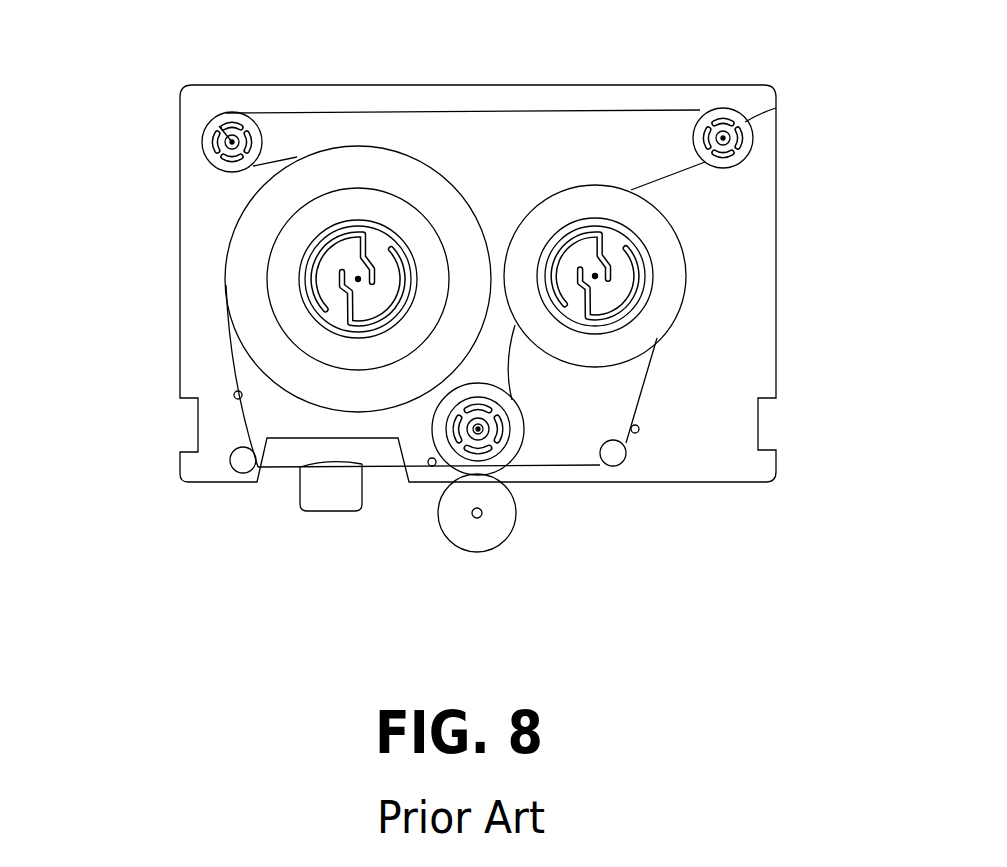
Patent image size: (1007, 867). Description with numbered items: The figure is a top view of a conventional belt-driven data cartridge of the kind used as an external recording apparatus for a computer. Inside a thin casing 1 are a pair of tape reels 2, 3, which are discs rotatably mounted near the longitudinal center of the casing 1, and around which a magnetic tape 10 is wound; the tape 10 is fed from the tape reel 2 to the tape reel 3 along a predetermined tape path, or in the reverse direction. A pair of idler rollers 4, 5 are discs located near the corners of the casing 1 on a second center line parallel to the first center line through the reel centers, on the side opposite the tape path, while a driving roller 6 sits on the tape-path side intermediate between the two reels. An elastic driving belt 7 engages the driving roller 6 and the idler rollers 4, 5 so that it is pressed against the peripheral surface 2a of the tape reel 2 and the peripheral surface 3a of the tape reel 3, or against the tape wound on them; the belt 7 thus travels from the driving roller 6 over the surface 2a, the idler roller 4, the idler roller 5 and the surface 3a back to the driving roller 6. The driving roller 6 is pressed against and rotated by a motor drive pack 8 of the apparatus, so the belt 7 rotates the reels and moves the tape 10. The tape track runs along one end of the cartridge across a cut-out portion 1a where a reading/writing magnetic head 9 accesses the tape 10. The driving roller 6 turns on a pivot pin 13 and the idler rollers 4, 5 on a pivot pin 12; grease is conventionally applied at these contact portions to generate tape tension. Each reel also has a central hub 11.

The casing 1 is at (777, 265).
The cut-out portion 1a is at (380, 475).
The tape reel 2 is at (277, 281).
The peripheral surface 2a is at (428, 163).
The tape reel 3 is at (660, 313).
The peripheral surface 3a is at (530, 208).
The idler roller 4 is at (218, 125).
The idler roller 5 is at (776, 108).
The driving roller 6 is at (500, 455).
The driving belt 7 is at (540, 110).
The motor drive pack 8 is at (477, 552).
The reading/writing magnetic head 9 is at (345, 512).
The tape 10 is at (238, 421).
The reel hub 11 is at (356, 279).
The pivot pin 12 is at (220, 125).
The pivot pin 13 is at (478, 437).